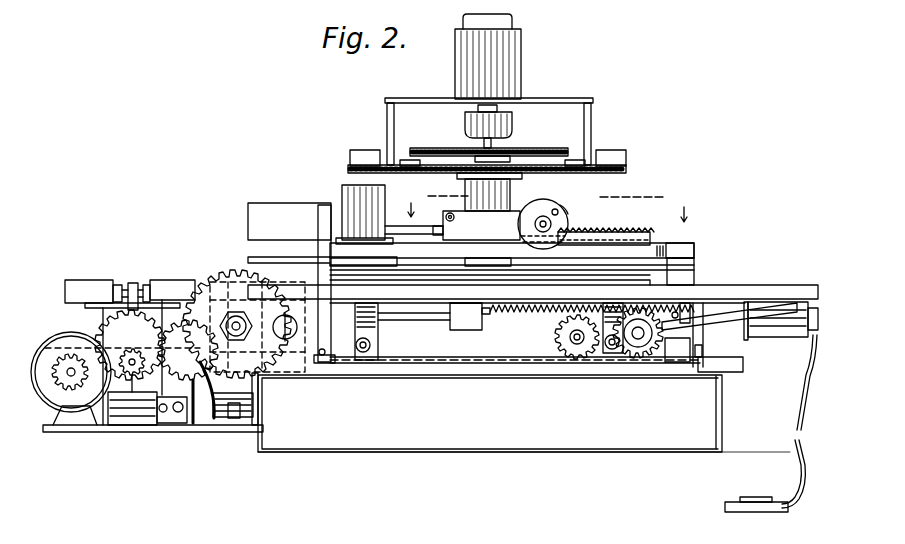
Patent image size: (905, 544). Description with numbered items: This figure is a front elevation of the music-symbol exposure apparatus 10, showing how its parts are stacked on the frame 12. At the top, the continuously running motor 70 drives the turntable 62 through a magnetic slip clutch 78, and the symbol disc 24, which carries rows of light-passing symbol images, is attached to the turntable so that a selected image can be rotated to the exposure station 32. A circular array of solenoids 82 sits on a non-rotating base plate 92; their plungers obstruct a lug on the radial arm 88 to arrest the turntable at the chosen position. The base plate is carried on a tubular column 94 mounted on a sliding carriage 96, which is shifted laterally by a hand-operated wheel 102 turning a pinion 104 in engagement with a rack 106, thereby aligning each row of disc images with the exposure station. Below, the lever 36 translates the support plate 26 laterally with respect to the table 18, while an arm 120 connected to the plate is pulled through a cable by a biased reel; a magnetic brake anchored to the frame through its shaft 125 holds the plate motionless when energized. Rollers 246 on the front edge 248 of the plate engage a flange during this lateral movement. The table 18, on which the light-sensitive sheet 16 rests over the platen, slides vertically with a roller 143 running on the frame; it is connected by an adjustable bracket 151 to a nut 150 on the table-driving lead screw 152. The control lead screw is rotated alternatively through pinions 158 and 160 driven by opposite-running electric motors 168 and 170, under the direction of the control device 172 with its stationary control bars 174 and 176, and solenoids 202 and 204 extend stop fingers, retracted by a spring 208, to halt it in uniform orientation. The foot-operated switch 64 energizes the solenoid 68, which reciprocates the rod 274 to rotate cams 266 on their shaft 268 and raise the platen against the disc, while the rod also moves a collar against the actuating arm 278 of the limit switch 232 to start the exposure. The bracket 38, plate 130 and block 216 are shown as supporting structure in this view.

The apparatus 10 is at (548, 204).
The frame 12 is at (716, 423).
The light-sensitive sheet 16 is at (536, 286).
The table 18 is at (722, 290).
The symbol disc 24 is at (656, 283).
The support plate 26 is at (682, 246).
The exposure station 32 is at (362, 237).
The lever 36 is at (714, 332).
The bracket 38 is at (256, 216).
The turntable 62 is at (592, 276).
The foot-operated switch 64 is at (758, 512).
The solenoid 68 is at (760, 339).
The motor 70 is at (515, 62).
The magnetic slip clutch 78 is at (466, 123).
The solenoids 82 is at (358, 150).
The radial arm 88 is at (518, 149).
The base plate 92 is at (625, 173).
The tubular column 94 is at (476, 193).
The sliding carriage 96 is at (582, 229).
The hand-operated wheel 102 is at (568, 214).
The pinion 104 is at (539, 201).
The rack 106 is at (618, 229).
The arm 120 is at (696, 350).
The shaft 125 is at (572, 347).
The plate 130 is at (389, 259).
The roller 143 is at (733, 367).
The nut 150 is at (246, 292).
The adjustable bracket 151 is at (228, 292).
The table-driving lead screw 152 is at (257, 327).
The pinion 158 is at (164, 424).
The pinion 160 is at (65, 433).
The electric motor 168 is at (193, 425).
The electric motor 170 is at (63, 344).
The control device 172 is at (136, 278).
The control bar 174 is at (88, 282).
The control bar 176 is at (180, 290).
The solenoid 202 is at (119, 427).
The solenoid 204 is at (254, 416).
The spring 208 is at (238, 420).
The slide block 216 is at (466, 331).
The limit switch 232 is at (473, 305).
The roller 246 is at (325, 363).
The front edge 248 is at (318, 222).
The cam 266 is at (352, 336).
The shaft 268 is at (368, 353).
The rod 274 is at (423, 322).
The actuating arm 278 is at (487, 313).